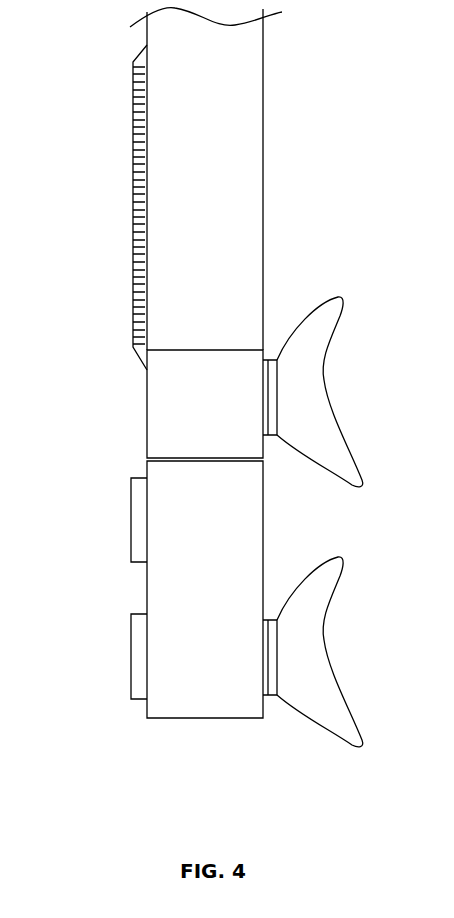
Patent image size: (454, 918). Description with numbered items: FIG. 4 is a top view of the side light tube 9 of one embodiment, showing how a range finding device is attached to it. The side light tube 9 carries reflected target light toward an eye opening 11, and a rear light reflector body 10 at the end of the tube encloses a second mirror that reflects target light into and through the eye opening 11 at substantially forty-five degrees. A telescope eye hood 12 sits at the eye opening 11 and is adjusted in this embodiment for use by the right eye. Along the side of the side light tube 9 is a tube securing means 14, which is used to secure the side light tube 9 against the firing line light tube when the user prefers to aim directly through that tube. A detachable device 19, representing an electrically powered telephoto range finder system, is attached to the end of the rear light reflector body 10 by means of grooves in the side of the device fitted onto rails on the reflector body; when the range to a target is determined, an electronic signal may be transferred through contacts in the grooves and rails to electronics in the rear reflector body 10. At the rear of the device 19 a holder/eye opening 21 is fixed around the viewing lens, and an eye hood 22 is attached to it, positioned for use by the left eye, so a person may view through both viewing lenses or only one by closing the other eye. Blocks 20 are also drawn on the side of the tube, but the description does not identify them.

The side light tube 9 is at (258, 184).
The rear light reflector body 10 is at (163, 373).
The eye opening 11 is at (268, 334).
The eye hood 12 is at (330, 376).
The tube securing means 14 is at (130, 288).
The detachable device 19 is at (266, 511).
The side blocks 20 is at (128, 634).
The holder/eye opening 21 is at (268, 676).
The eye hood 22 is at (330, 633).